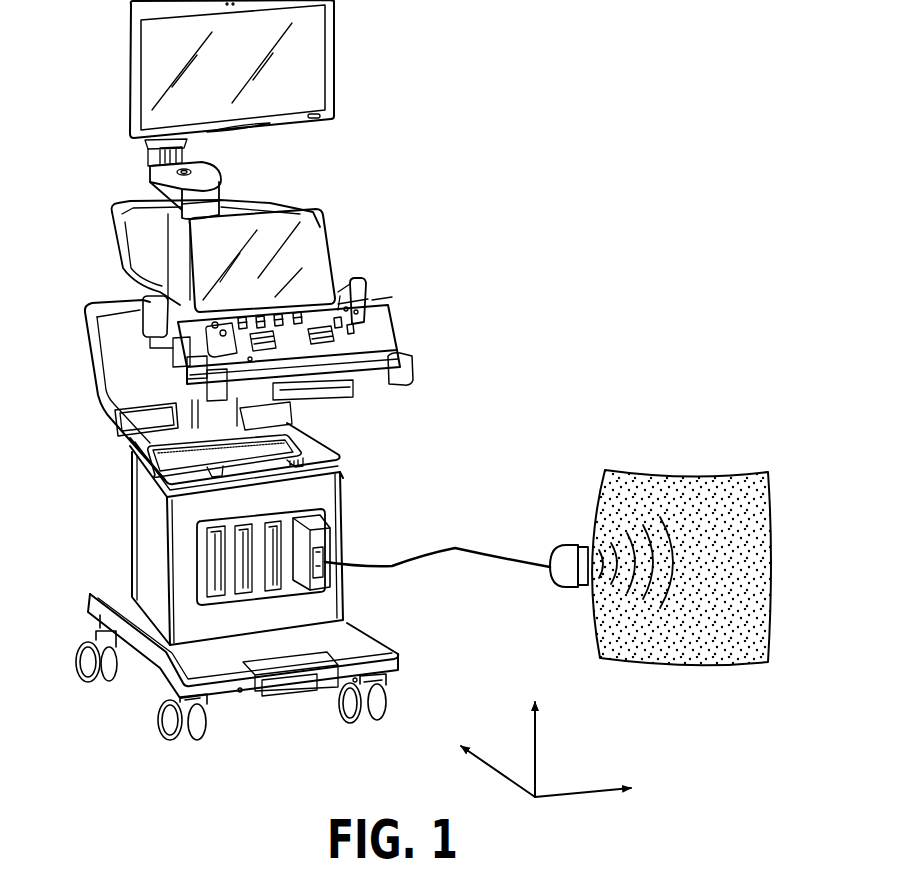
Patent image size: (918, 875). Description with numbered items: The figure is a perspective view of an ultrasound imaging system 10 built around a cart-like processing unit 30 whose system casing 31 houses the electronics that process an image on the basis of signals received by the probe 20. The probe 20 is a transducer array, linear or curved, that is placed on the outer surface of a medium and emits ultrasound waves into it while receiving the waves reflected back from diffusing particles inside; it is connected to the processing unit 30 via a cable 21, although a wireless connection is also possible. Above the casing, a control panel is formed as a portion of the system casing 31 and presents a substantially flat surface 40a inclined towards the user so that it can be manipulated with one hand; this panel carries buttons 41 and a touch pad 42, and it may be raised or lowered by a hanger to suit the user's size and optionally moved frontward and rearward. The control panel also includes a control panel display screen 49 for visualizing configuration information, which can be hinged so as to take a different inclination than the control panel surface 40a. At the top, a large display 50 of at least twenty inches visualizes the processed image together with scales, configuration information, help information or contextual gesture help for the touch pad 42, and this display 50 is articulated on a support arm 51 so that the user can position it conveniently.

The ultrasound imaging system 10 is at (550, 84).
The probe 20 is at (557, 545).
The cable 21 is at (447, 552).
The processing unit 30 is at (118, 465).
The system casing 31 is at (140, 508).
The flat surface 40a is at (384, 347).
The buttons 41 is at (372, 316).
The touch pad 42 is at (358, 280).
The control panel display screen 49 is at (240, 251).
The display 50 is at (131, 57).
The support arm 51 is at (150, 178).